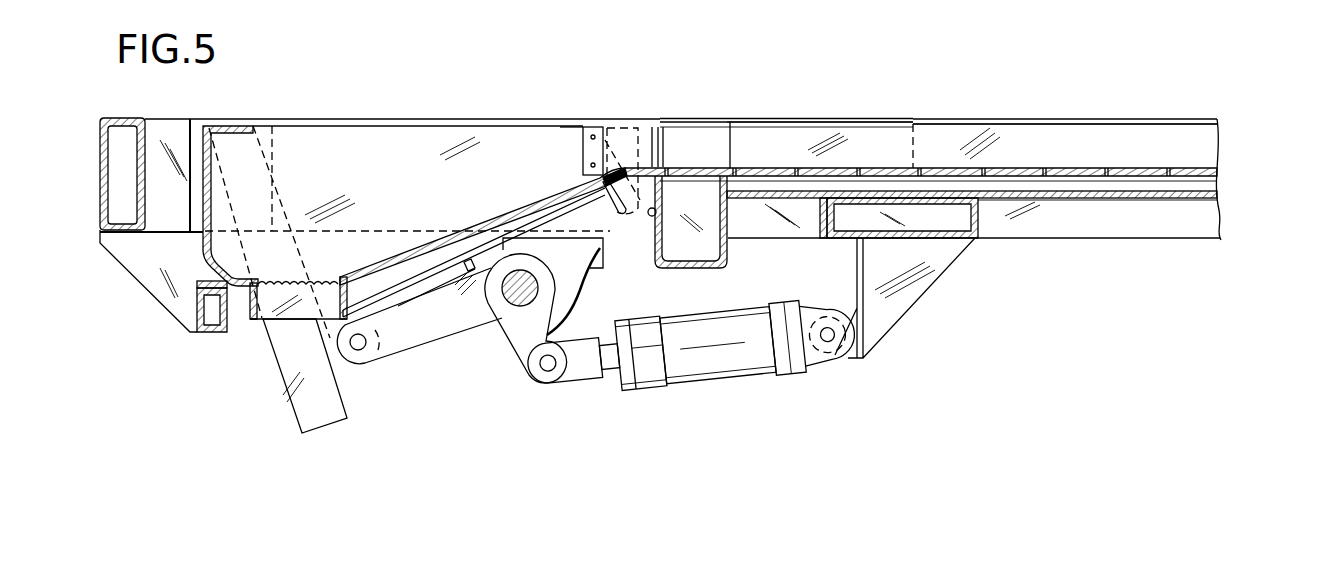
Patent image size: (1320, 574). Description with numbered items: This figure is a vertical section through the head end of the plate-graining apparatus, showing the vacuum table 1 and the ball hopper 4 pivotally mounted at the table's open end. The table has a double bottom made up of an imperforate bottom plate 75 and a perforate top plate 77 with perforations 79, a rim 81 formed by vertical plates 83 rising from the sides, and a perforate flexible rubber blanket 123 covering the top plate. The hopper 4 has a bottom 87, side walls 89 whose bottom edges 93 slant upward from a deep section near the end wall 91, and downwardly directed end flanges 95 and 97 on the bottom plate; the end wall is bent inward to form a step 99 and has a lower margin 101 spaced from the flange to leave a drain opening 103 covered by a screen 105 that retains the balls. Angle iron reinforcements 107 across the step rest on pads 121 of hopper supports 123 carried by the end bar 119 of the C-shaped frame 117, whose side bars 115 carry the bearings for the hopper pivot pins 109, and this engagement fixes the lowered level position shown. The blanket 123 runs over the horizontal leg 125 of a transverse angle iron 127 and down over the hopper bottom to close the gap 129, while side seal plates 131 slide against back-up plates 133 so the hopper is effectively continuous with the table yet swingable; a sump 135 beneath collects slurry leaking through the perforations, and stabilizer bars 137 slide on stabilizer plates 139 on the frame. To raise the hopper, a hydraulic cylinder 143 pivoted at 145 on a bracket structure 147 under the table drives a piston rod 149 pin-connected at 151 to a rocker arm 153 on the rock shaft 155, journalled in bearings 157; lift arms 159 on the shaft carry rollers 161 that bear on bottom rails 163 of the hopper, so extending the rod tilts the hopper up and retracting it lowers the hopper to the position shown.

The vacuum table 1 is at (1145, 117).
The hopper 4 is at (205, 182).
The imperforate bottom plate 75 is at (1122, 202).
The perforate top plate 77 is at (1210, 192).
The perforations 79 is at (797, 167).
The rim 81 is at (845, 119).
The vertical plates 83 is at (1205, 152).
The bottom 87 is at (378, 284).
The side walls 89 is at (375, 135).
The end wall 91 is at (207, 240).
The bottom edges 93 is at (554, 286).
The end flange 95 is at (322, 334).
The end flange 97 is at (622, 212).
The step 99 is at (222, 274).
The lower margin 101 is at (252, 320).
The drain opening 103 is at (288, 322).
The screen 105 is at (294, 282).
The angle iron reinforcements 107 is at (200, 280).
The pivot pins 109 is at (628, 124).
The side bars 115 is at (342, 118).
The C-shaped frame 117 is at (96, 216).
The end bar 119 is at (115, 118).
The pads 121 is at (200, 291).
The hopper supports 123 is at (172, 126).
The horizontal leg 125 is at (640, 165).
The angle iron 127 is at (658, 216).
The gap 129 is at (612, 160).
The side seal plates 131 is at (594, 125).
The back-up plates 133 is at (690, 128).
The trough or sump 135 is at (685, 268).
The stabilizer bars 137 is at (347, 408).
The stabilizer plates 139 is at (273, 158).
The hydraulic cylinder 143 is at (681, 361).
The pivotal mounting 145 is at (830, 356).
The bracket structure 147 is at (917, 300).
The piston rod 149 is at (614, 366).
The pin connection 151 is at (547, 370).
The rocker arm 153 is at (546, 320).
The rock shaft 155 is at (536, 290).
The bearings 157 is at (562, 322).
The lift arms 159 is at (419, 330).
The rollers 161 is at (362, 366).
The bottom rails 163 is at (443, 300).